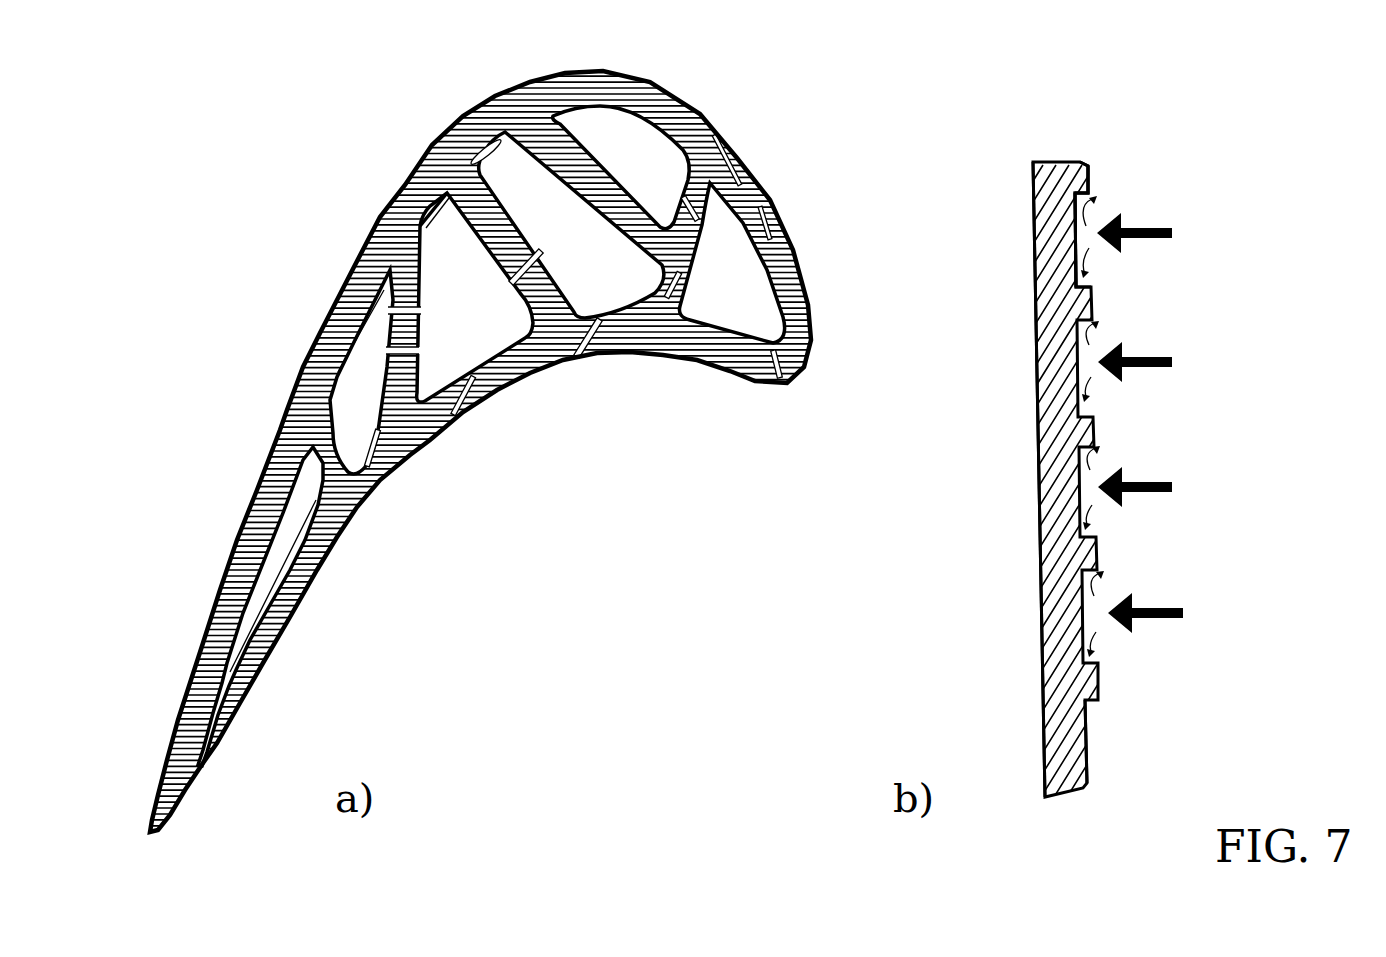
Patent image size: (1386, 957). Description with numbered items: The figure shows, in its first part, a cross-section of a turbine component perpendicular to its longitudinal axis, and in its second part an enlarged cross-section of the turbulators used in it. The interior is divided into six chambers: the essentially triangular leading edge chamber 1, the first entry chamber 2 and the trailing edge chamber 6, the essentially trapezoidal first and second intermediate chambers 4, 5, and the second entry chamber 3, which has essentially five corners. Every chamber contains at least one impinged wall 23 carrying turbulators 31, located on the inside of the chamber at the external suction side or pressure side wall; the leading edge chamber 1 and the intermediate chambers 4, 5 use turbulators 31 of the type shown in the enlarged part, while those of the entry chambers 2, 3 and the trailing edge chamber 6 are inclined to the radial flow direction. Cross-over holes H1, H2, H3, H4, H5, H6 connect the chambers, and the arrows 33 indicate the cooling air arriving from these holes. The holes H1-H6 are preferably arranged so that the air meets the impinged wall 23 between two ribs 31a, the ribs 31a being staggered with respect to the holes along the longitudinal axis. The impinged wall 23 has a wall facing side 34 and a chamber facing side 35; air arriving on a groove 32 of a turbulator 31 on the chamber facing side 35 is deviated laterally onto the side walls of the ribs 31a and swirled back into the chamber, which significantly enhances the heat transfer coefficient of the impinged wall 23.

The leading edge chamber 1 is at (760, 320).
The first entry chamber 2 is at (639, 180).
The second entry chamber 3 is at (574, 243).
The first intermediate chamber 4 is at (461, 283).
The second intermediate chamber 5 is at (361, 418).
The trailing edge chamber 6 is at (317, 510).
The impinged wall 23 is at (313, 445).
The cross-over hole H1 is at (723, 218).
The cross-over hole H2 is at (675, 318).
The cross-over hole H3 is at (437, 215).
The cross-over hole H4 is at (512, 301).
The cross-over hole H5 is at (373, 311).
The cross-over hole H6 is at (371, 351).
The turbulator 31 is at (1083, 164).
The rib 31a is at (1089, 184).
The groove 32 is at (1078, 236).
The cooling air from impingement holes 33 is at (1150, 426).
The wall facing side of impinged wall 34 is at (1031, 700).
The chamber facing side of impinged wall 35 is at (1145, 700).